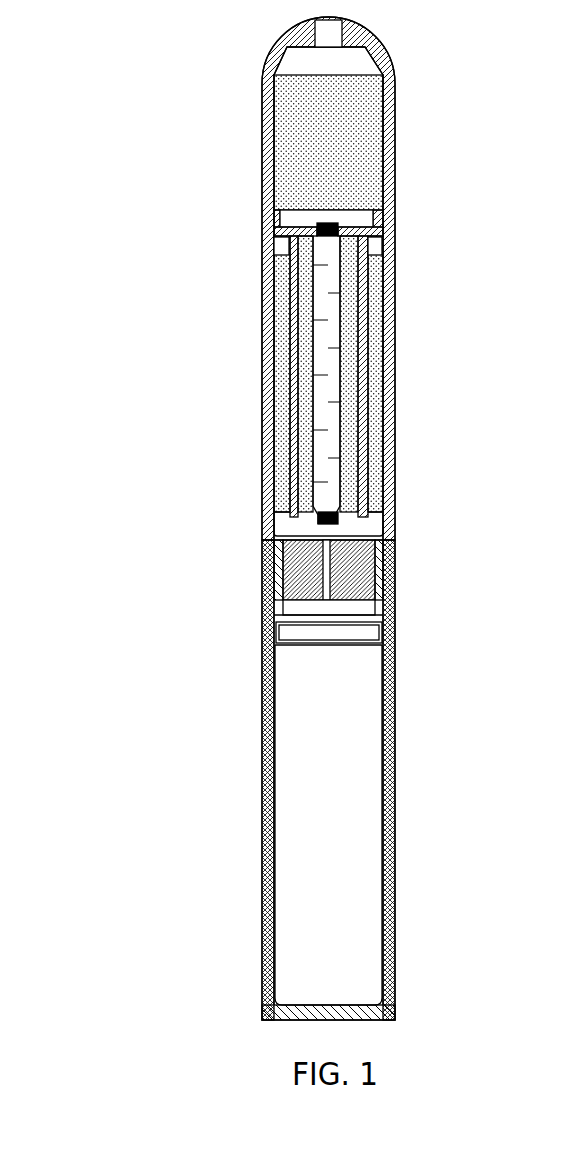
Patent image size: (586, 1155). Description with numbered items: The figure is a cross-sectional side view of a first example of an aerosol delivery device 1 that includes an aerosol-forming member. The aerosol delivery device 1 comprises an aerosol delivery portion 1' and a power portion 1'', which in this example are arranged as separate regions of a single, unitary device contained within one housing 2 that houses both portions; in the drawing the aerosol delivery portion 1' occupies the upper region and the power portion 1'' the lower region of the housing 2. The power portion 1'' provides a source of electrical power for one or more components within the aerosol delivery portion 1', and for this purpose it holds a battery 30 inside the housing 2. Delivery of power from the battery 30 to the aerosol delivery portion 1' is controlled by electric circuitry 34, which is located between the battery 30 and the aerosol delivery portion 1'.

The aerosol delivery device 1 is at (284, 518).
The aerosol delivery portion 1' is at (397, 345).
The power portion 1'' is at (363, 825).
The housing 2 is at (393, 117).
The battery 30 is at (305, 825).
The electric circuitry 34 is at (393, 628).